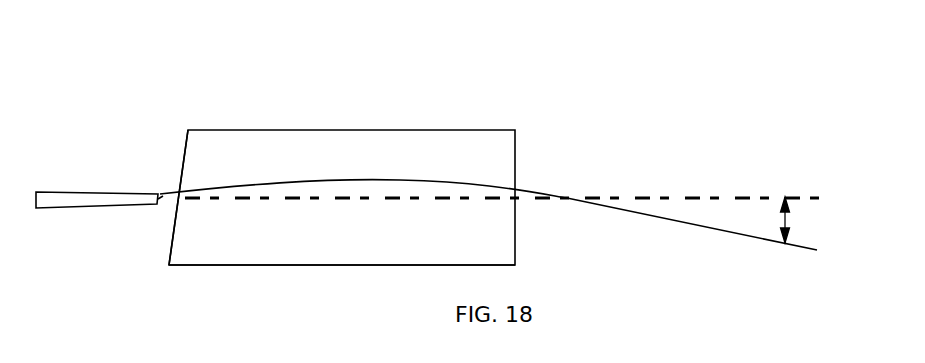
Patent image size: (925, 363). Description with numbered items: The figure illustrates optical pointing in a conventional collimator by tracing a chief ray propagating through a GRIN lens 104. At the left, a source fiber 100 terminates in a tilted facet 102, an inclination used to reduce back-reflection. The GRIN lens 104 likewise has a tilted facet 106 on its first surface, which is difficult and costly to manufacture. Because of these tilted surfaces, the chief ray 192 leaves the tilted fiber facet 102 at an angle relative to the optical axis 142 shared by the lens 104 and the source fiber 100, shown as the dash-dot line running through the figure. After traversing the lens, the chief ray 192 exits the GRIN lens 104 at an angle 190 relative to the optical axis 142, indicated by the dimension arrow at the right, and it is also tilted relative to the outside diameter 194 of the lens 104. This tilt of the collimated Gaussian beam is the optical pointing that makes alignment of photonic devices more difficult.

The source fiber 100 is at (44, 192).
The tilted facet 102 is at (160, 202).
The GRIN lens 104 is at (298, 147).
The tilted facet 106 is at (178, 149).
The chief ray 192 is at (422, 170).
The outside diameter 194 is at (258, 265).
The optical axis 142 is at (702, 192).
The angle 190 is at (787, 220).